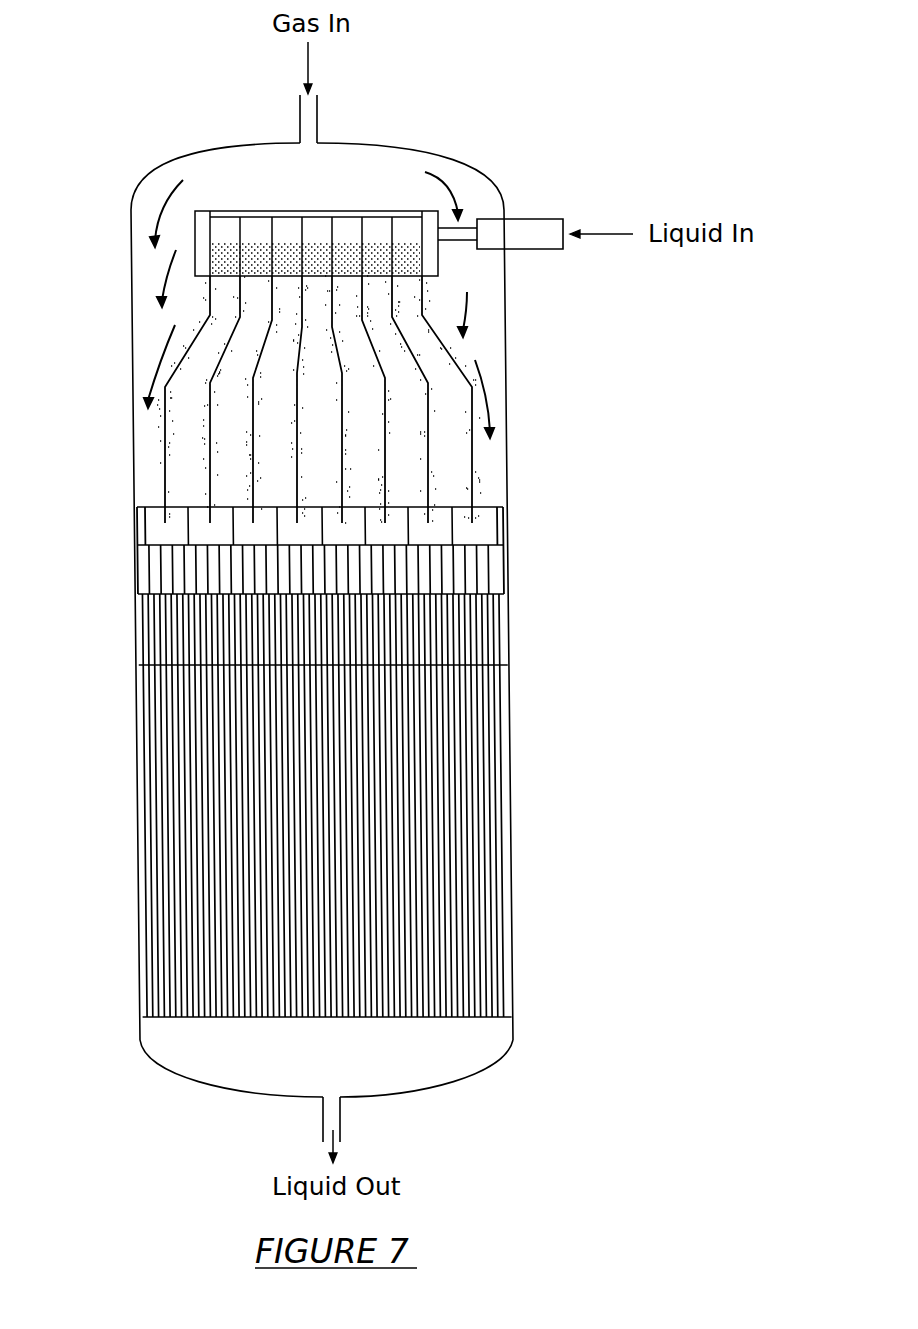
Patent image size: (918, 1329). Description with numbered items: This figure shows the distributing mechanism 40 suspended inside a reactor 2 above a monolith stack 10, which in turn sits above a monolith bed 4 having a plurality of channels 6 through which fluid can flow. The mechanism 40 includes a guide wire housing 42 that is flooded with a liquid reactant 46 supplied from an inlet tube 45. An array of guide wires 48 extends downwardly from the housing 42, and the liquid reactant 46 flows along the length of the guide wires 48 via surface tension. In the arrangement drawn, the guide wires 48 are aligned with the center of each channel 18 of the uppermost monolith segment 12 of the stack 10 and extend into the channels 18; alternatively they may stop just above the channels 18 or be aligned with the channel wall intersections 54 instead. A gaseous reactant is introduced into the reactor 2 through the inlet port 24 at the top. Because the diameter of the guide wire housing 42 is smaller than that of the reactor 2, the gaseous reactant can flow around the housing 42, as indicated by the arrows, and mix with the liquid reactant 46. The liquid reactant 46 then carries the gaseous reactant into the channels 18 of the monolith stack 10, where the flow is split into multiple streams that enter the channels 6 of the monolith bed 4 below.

The reactor 2 is at (187, 158).
The monolith bed 4 is at (150, 888).
The channels 6 is at (498, 847).
The monolith stack 10 is at (512, 507).
The monolith segment 12 is at (135, 533).
The channel 18 is at (210, 538).
The inlet port 24 is at (308, 133).
The mechanism 40 is at (388, 191).
The guide wire housing 42 is at (258, 212).
The inlet tube 45 is at (533, 218).
The liquid reactant 46 is at (430, 253).
The guide wires 48 is at (210, 458).
The channel wall intersections 54 is at (453, 512).